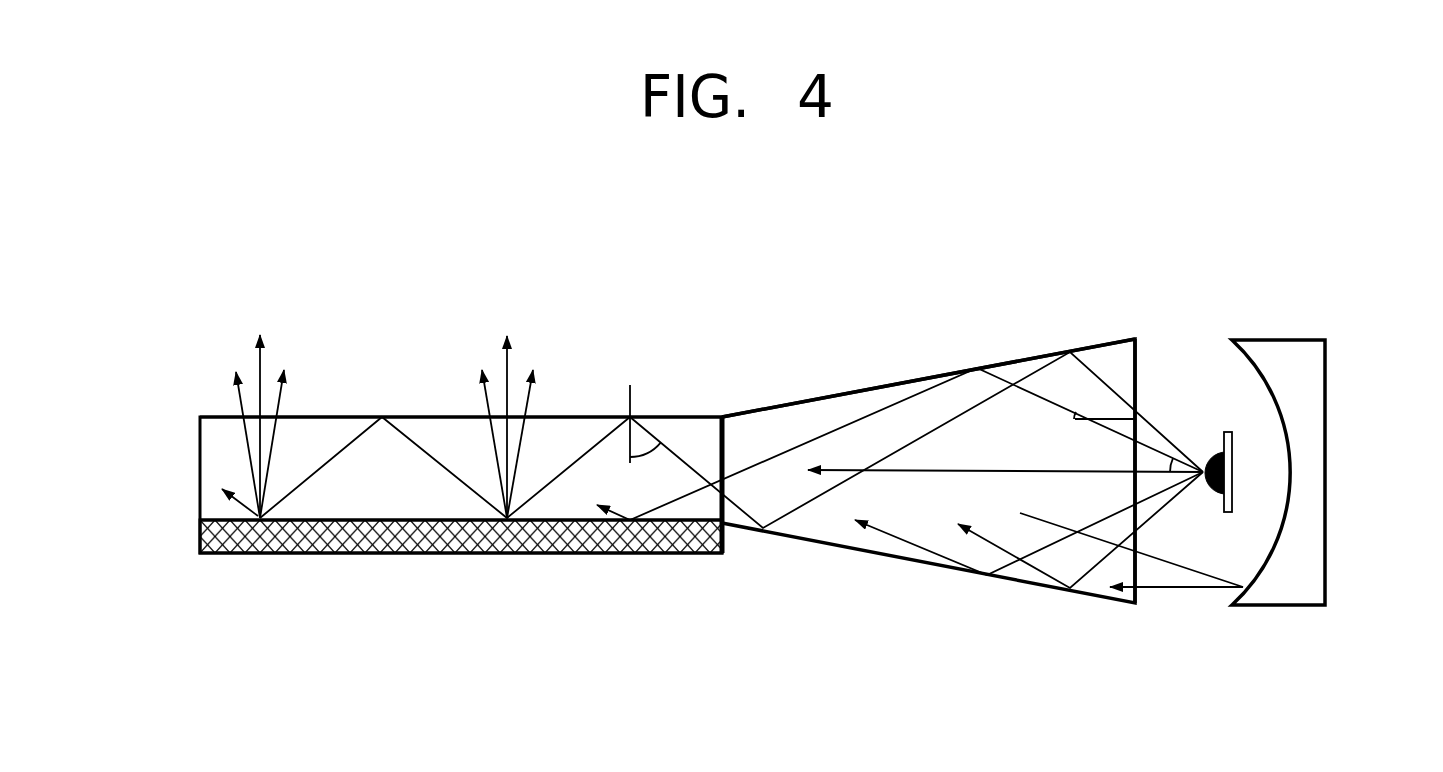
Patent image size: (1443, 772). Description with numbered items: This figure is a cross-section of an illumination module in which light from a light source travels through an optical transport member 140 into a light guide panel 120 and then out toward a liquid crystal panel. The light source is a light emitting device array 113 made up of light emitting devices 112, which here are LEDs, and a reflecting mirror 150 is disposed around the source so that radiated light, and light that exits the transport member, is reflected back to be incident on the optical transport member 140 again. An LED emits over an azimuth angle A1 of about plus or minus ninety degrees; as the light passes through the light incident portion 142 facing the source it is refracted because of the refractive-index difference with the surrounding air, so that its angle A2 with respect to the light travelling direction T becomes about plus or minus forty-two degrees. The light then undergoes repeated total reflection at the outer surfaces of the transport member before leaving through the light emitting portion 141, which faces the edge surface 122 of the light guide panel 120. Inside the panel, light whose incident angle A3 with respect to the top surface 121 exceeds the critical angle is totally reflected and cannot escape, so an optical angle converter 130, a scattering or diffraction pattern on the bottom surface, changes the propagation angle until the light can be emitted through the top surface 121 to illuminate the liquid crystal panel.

The light emitting device 112 is at (1218, 496).
The light emitting device array 113 is at (1227, 432).
The light guide panel 120 is at (186, 501).
The top surface 121 is at (222, 417).
The edge surface 122 is at (722, 447).
The optical angle converter 130 is at (199, 560).
The optical transport member 140 is at (893, 574).
The light emitting portion 141 is at (740, 442).
The light incident portion 142 is at (1135, 503).
The reflecting mirror 150 is at (1327, 450).
The light travelling direction T is at (967, 470).
The azimuth angle A1 is at (1173, 466).
The angle of light having passed through the light incident portion A2 is at (1080, 408).
The incident angle A3 is at (675, 450).